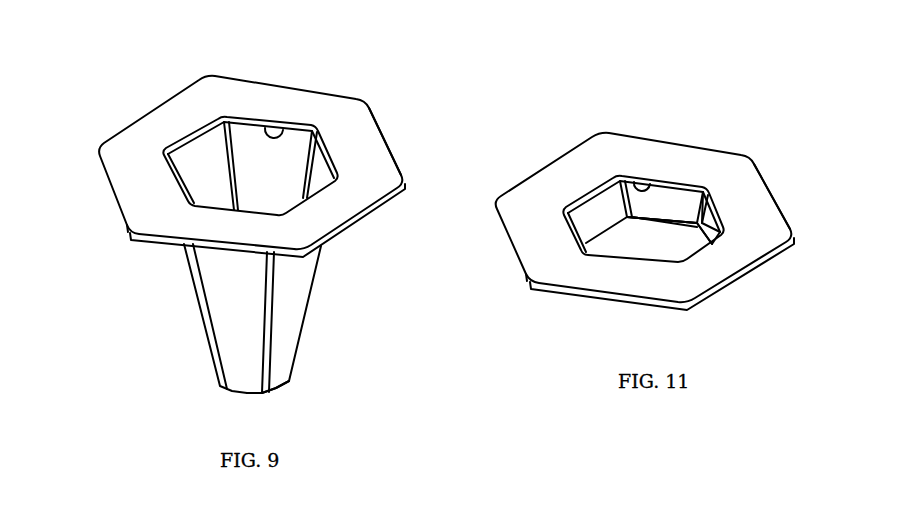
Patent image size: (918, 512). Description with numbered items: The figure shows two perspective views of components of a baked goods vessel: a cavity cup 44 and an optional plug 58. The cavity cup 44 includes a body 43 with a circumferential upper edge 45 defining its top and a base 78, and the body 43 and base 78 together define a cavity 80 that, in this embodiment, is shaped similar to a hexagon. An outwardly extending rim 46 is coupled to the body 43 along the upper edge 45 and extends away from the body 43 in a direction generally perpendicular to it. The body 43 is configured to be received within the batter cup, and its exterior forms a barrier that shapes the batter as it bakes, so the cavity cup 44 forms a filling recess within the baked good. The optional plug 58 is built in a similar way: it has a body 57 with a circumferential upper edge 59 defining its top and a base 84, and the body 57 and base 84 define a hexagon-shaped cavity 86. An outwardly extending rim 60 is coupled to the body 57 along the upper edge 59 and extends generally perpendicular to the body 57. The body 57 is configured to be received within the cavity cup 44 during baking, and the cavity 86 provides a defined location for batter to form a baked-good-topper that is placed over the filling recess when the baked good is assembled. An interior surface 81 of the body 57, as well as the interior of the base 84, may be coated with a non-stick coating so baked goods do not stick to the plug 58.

In FIG. 9, the cavity cup 44 is at (91, 89).
In FIG. 9, the cavity 80 is at (207, 166).
In FIG. 9, the circumferential upper edge 45 is at (281, 130).
In FIG. 9, the rim 46 is at (377, 158).
In FIG. 9, the body 43 is at (228, 296).
In FIG. 9, the base 78 is at (283, 387).
In FIG. 11, the optional plug 58 is at (563, 115).
In FIG. 11, the circumferential upper edge 59 is at (650, 184).
In FIG. 11, the body 57 is at (663, 208).
In FIG. 11, the rim 60 is at (772, 214).
In FIG. 11, the interior surface 81 is at (711, 228).
In FIG. 11, the base 84 is at (624, 242).
In FIG. 11, the cavity 86 is at (662, 237).